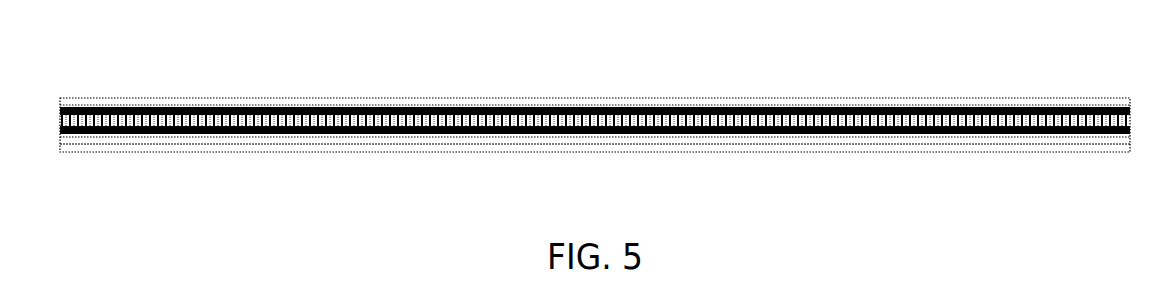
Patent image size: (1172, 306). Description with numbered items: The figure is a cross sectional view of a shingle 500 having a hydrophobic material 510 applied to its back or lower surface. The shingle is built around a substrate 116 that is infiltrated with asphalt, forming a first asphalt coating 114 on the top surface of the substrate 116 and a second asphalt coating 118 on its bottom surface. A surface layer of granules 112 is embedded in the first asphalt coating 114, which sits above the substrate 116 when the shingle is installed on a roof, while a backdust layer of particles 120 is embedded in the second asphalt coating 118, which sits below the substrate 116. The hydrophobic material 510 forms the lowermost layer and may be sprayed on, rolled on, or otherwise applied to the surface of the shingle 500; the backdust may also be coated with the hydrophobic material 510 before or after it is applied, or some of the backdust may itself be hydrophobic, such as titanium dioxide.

The shingle 500 is at (595, 110).
The surface layer of granules 112 is at (235, 102).
The first asphalt coating 114 is at (297, 108).
The substrate 116 is at (372, 122).
The second asphalt coating 118 is at (533, 133).
The backdust layer of particles 120 is at (570, 137).
The hydrophobic material 510 is at (342, 150).